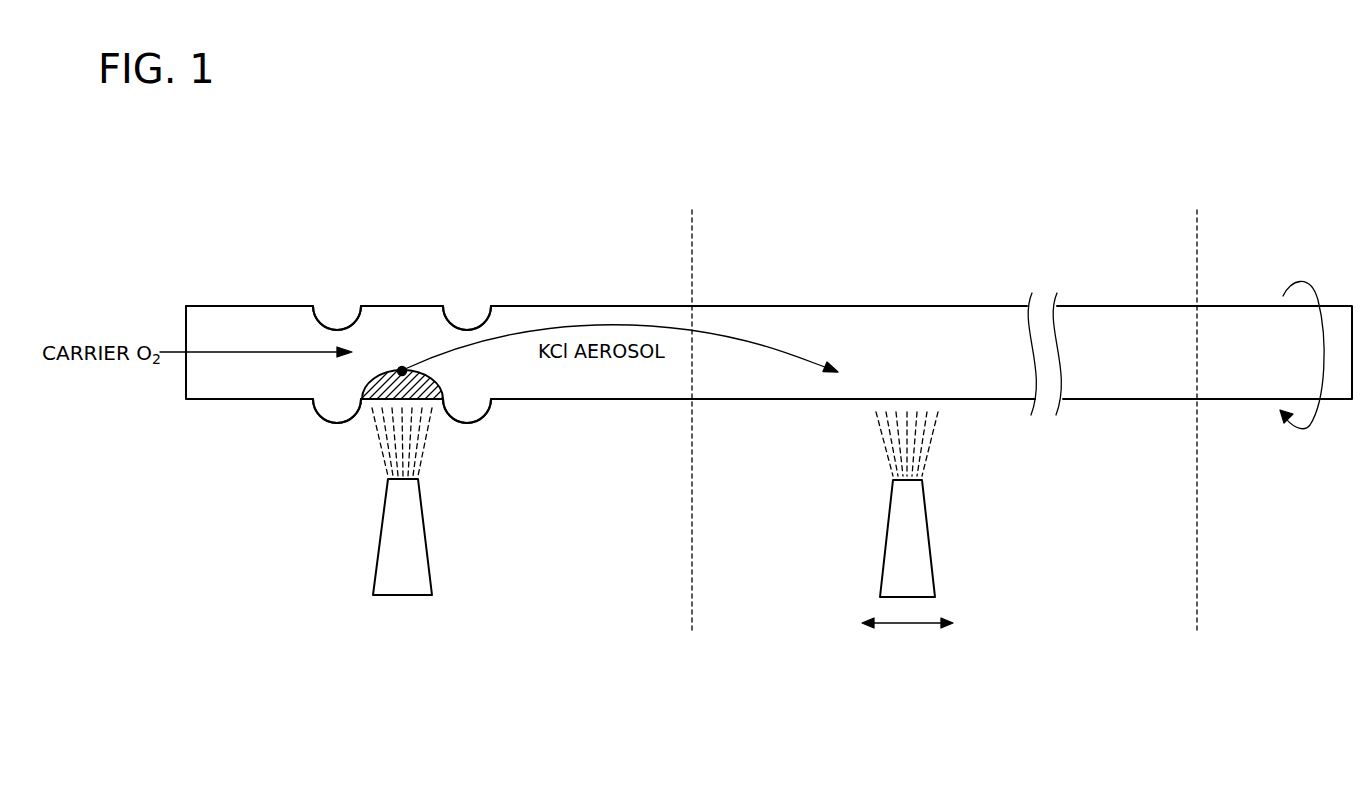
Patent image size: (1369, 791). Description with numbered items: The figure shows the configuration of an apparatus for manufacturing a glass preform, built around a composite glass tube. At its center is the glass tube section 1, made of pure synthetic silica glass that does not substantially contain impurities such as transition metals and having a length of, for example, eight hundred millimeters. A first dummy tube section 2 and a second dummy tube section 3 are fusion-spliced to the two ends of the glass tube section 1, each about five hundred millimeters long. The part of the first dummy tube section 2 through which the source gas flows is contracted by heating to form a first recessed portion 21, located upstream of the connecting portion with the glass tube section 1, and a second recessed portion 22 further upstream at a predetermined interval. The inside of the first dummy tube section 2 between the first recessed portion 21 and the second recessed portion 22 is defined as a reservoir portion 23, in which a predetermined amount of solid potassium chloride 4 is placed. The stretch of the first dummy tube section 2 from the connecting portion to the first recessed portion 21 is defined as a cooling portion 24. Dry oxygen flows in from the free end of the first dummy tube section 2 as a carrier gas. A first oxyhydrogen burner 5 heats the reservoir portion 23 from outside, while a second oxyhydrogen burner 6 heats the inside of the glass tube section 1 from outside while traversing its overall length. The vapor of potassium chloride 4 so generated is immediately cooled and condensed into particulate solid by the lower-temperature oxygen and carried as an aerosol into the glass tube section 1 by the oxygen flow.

The glass tube section 1 is at (697, 204).
The first dummy tube section 2 is at (186, 204).
The second dummy tube section 3 is at (1352, 204).
The potassium chloride 4 is at (430, 390).
The first oxyhydrogen burner 5 is at (413, 553).
The second oxyhydrogen burner 6 is at (918, 554).
The first recessed portion 21 is at (475, 410).
The second recessed portion 22 is at (338, 410).
The reservoir portion 23 is at (398, 332).
The cooling portion 24 is at (688, 257).